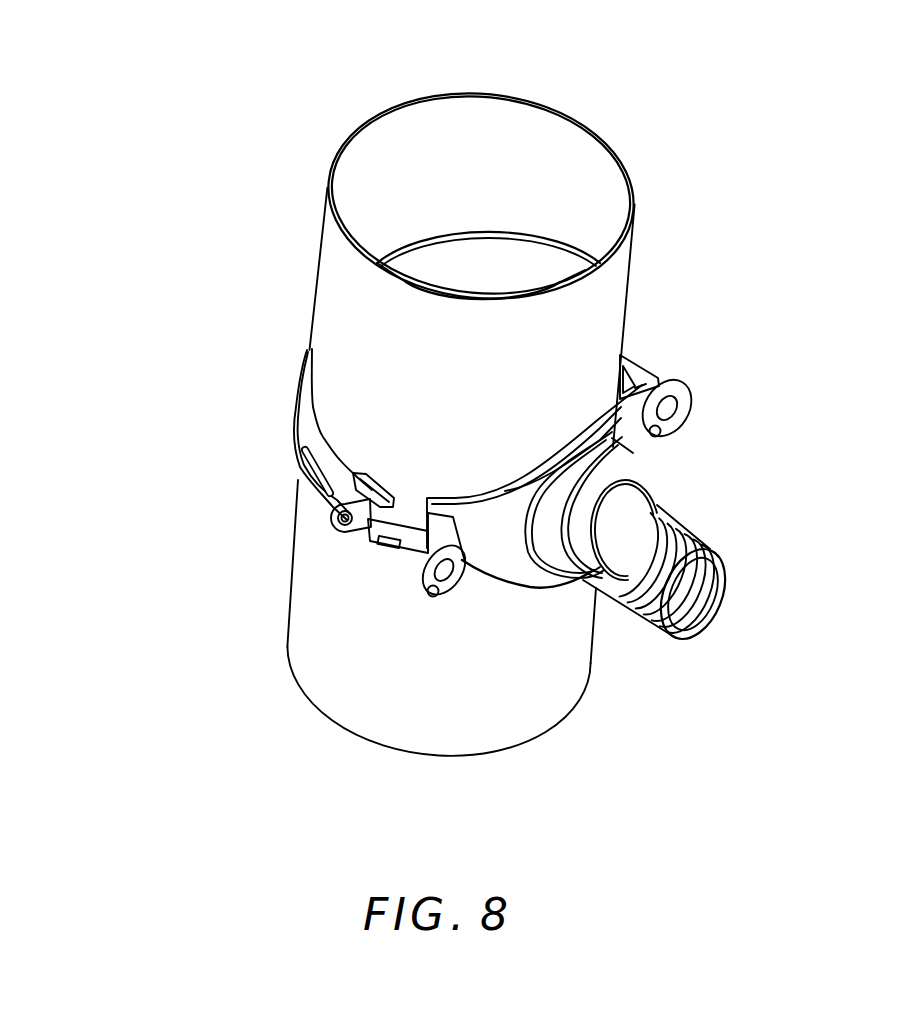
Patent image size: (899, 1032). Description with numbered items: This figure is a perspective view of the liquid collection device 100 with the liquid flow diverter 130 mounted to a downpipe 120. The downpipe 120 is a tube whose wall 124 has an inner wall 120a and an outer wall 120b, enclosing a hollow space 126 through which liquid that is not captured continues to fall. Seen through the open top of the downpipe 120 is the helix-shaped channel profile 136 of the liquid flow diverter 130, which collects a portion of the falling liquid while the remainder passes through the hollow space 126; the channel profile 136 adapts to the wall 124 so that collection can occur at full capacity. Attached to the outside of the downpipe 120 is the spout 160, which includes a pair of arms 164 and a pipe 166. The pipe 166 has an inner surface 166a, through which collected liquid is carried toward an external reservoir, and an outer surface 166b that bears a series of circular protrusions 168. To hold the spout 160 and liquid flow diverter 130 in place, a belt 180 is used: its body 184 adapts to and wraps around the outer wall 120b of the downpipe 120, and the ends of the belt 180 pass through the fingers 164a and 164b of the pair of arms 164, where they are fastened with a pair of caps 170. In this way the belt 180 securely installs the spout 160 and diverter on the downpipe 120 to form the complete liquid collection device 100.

The liquid collection device 100 is at (184, 81).
The downpipe 120 is at (260, 587).
The inner wall 120a is at (404, 150).
The outer wall 120b is at (347, 308).
The wall 124 is at (315, 256).
The hollow space 126 is at (366, 163).
The liquid flow diverter 130 is at (571, 224).
The channel profile 136 is at (528, 250).
The spout 160 is at (740, 458).
The pair of arms 164 is at (487, 553).
The finger 164a is at (620, 370).
The finger 164b is at (375, 547).
The pipe 166 is at (603, 580).
The inner surface 166a is at (690, 613).
The outer surface 166b is at (657, 520).
The series of circular protrusions 168 is at (710, 536).
The pair of caps 170 is at (448, 600).
The belt 180 is at (283, 426).
The body 184 is at (303, 368).